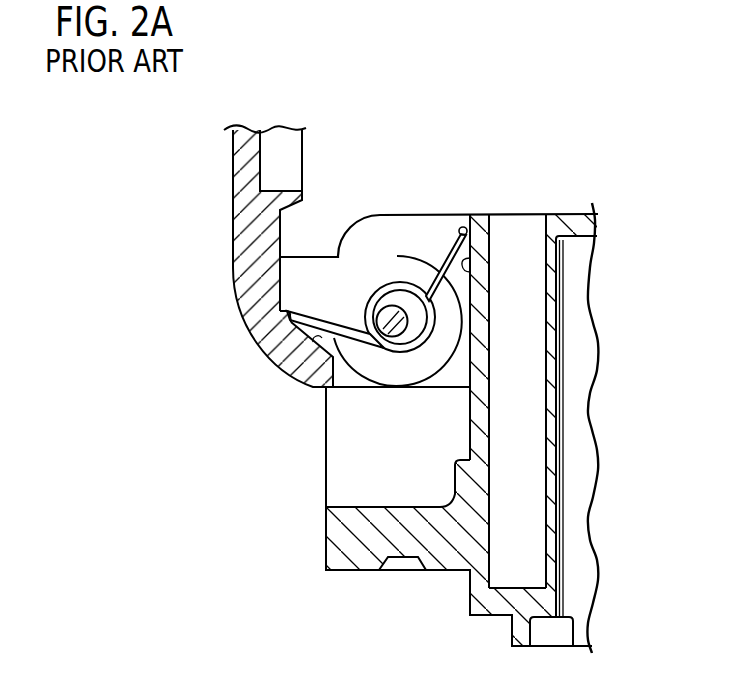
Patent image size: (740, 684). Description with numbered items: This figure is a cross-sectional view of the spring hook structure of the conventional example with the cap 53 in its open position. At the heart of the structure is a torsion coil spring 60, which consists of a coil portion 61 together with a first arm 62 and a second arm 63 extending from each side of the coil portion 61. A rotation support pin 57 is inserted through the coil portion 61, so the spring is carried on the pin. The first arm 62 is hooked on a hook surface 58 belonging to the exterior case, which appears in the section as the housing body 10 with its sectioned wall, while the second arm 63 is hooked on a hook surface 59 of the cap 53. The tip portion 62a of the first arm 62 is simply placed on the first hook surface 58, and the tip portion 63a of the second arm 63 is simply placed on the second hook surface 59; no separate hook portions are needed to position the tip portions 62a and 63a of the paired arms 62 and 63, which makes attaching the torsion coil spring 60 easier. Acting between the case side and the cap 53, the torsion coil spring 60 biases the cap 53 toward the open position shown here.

The housing body 10 is at (487, 369).
The cap 53 is at (240, 179).
The rotation support pin 57 is at (389, 330).
The hook surface 58 is at (473, 270).
The hook surface 59 is at (310, 335).
The torsion coil spring 60 is at (337, 257).
The coil portion 61 is at (397, 283).
The first arm 62 is at (471, 222).
The tip portion 62a is at (466, 228).
The second arm 63 is at (271, 345).
The tip portion 63a is at (283, 314).